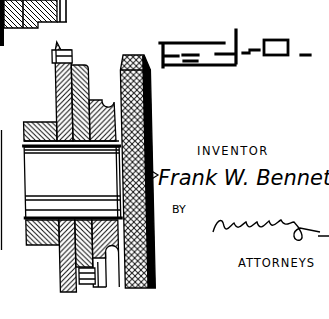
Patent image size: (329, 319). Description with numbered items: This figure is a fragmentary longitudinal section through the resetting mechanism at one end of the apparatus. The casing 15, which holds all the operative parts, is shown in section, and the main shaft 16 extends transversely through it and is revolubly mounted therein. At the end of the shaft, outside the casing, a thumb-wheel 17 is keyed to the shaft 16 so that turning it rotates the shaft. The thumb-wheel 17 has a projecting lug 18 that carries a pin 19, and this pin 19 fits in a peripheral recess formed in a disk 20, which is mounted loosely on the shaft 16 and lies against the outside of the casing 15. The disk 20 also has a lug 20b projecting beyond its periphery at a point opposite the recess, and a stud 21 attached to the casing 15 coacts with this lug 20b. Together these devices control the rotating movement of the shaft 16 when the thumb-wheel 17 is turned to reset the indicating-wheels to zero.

The casing 15 is at (58, 80).
The main shaft 16 is at (72, 179).
The thumb-wheel 17 is at (132, 53).
The projecting lug 18 is at (95, 274).
The pin 19 is at (77, 273).
The disk 20 is at (84, 94).
The lug 20b is at (80, 48).
The stud 21 is at (74, 58).